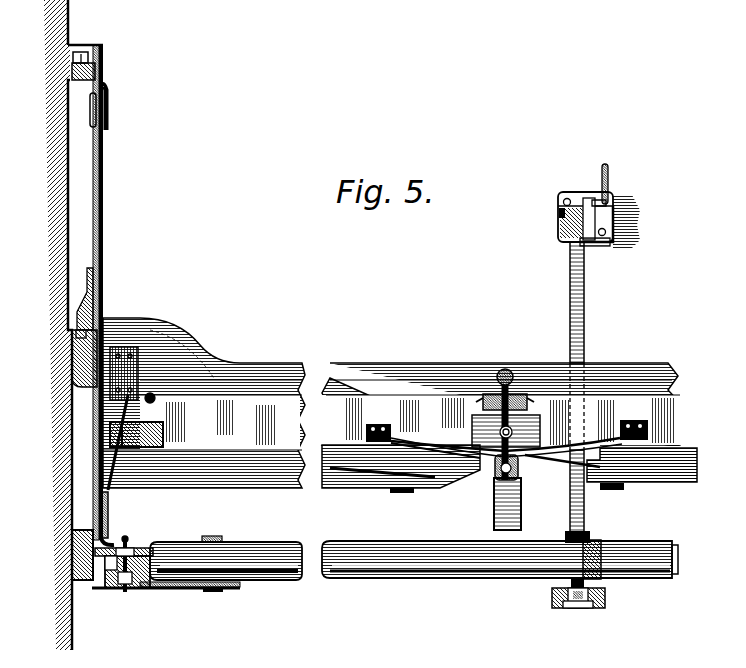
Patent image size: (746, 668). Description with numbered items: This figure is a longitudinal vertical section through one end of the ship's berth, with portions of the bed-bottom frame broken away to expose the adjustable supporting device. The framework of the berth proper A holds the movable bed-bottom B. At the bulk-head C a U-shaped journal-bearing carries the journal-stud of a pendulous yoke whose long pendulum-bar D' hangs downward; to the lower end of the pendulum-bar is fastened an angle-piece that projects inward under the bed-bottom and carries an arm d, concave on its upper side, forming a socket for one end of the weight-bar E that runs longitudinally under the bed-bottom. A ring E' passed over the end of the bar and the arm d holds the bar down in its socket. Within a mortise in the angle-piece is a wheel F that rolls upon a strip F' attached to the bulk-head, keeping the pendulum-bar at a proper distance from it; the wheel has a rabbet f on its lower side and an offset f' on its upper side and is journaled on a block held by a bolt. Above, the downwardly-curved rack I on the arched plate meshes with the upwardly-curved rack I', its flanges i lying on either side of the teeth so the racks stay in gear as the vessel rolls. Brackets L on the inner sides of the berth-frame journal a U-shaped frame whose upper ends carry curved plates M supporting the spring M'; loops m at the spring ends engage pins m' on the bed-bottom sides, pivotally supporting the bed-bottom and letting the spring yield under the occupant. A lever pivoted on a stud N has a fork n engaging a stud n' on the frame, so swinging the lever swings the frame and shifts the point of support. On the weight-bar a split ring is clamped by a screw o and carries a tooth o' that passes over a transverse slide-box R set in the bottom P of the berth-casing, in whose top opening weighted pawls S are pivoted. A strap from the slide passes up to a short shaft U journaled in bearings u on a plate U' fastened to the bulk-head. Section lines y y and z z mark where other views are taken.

The bulk-head C is at (88, 50).
The pendulum-bar D' is at (118, 295).
The downwardly-curved rack I is at (60, 299).
The ribs or flanges i is at (74, 334).
The coacting rack I' is at (63, 358).
The framework of the berth A is at (306, 372).
The stud n' is at (145, 375).
The bed-bottom B is at (165, 434).
The section line y y is at (505, 368).
The stud N is at (480, 400).
The curved plate M is at (519, 458).
The spring M' is at (456, 437).
The loops m is at (520, 472).
The pins or studs m' is at (488, 499).
The section line z z is at (403, 440).
The brackets L is at (528, 418).
The fork n is at (530, 480).
The short shaft U is at (585, 355).
The plate U' is at (638, 221).
The bearings u is at (558, 214).
The weight-bar E is at (414, 568).
The ring E' is at (228, 527).
The strip F' is at (58, 555).
The roller or wheel F is at (166, 553).
The central recess or rabbet f is at (136, 556).
The offset or projection f' is at (125, 534).
The arm d is at (70, 580).
The bottom of the berth-casing P is at (607, 598).
The slide-box R is at (578, 610).
The weighted pawls or tumblers S is at (566, 610).
The screw o is at (541, 590).
The tooth o' is at (543, 605).